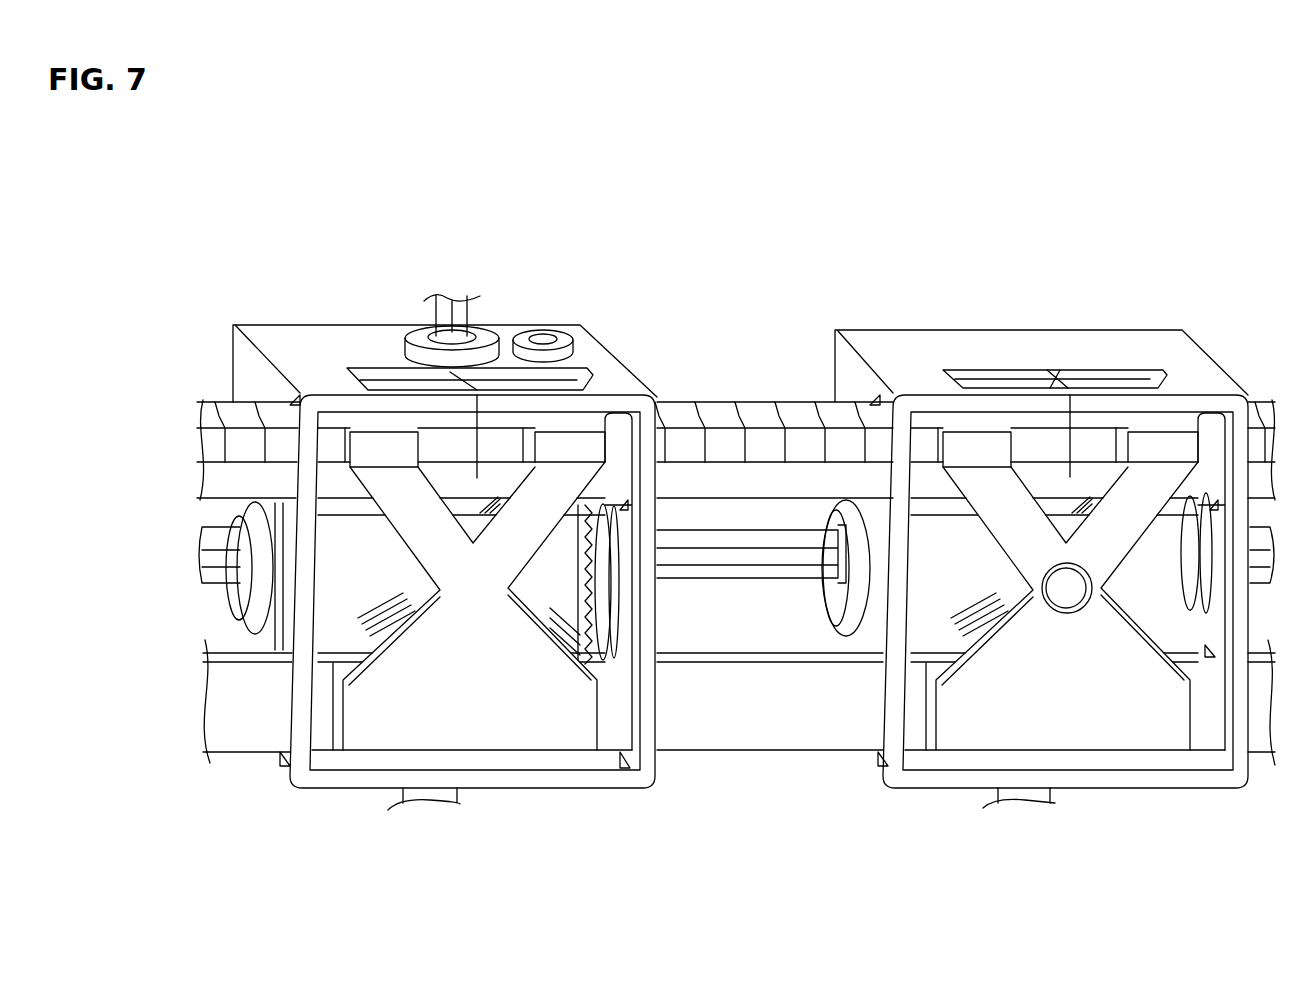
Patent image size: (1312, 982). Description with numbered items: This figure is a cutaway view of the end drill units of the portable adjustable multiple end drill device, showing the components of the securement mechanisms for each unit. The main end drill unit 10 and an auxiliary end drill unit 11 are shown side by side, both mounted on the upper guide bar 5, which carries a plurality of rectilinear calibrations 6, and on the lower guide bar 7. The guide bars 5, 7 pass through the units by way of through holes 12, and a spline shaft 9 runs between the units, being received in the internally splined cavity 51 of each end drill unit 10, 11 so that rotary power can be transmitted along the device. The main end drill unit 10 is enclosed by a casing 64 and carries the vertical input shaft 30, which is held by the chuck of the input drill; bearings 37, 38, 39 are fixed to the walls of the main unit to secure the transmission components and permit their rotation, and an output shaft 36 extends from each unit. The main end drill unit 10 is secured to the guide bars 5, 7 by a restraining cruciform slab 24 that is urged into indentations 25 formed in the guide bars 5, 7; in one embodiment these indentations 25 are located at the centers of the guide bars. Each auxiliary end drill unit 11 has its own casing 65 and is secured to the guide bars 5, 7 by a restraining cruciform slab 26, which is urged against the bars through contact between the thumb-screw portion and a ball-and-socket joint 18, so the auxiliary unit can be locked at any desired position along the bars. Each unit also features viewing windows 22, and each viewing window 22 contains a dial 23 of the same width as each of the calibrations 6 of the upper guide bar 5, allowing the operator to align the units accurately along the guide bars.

The upper guide bar 5 is at (743, 410).
The rectilinear calibrations 6 is at (722, 417).
The lower guide bar 7 is at (697, 733).
The spline shaft 9 is at (678, 577).
The main end drill unit 10 is at (565, 782).
The auxiliary end drill unit 11 is at (1185, 780).
The through holes 12 is at (293, 403).
The ball-and-socket joint 18 is at (1060, 600).
The viewing window 22 is at (567, 375).
The dial 23 is at (477, 388).
The restraining cruciform slab 24 is at (437, 553).
The indentations 25 is at (362, 422).
The restraining cruciform slab 26 is at (1022, 547).
The input shaft 30 is at (463, 312).
The output shaft 36 is at (407, 800).
The bearing 37 is at (418, 347).
The bearing 38 is at (570, 348).
The bearing 39 is at (230, 510).
The internally splined cavity 51 is at (243, 580).
The casing 64 is at (263, 323).
The casing 65 is at (1200, 340).